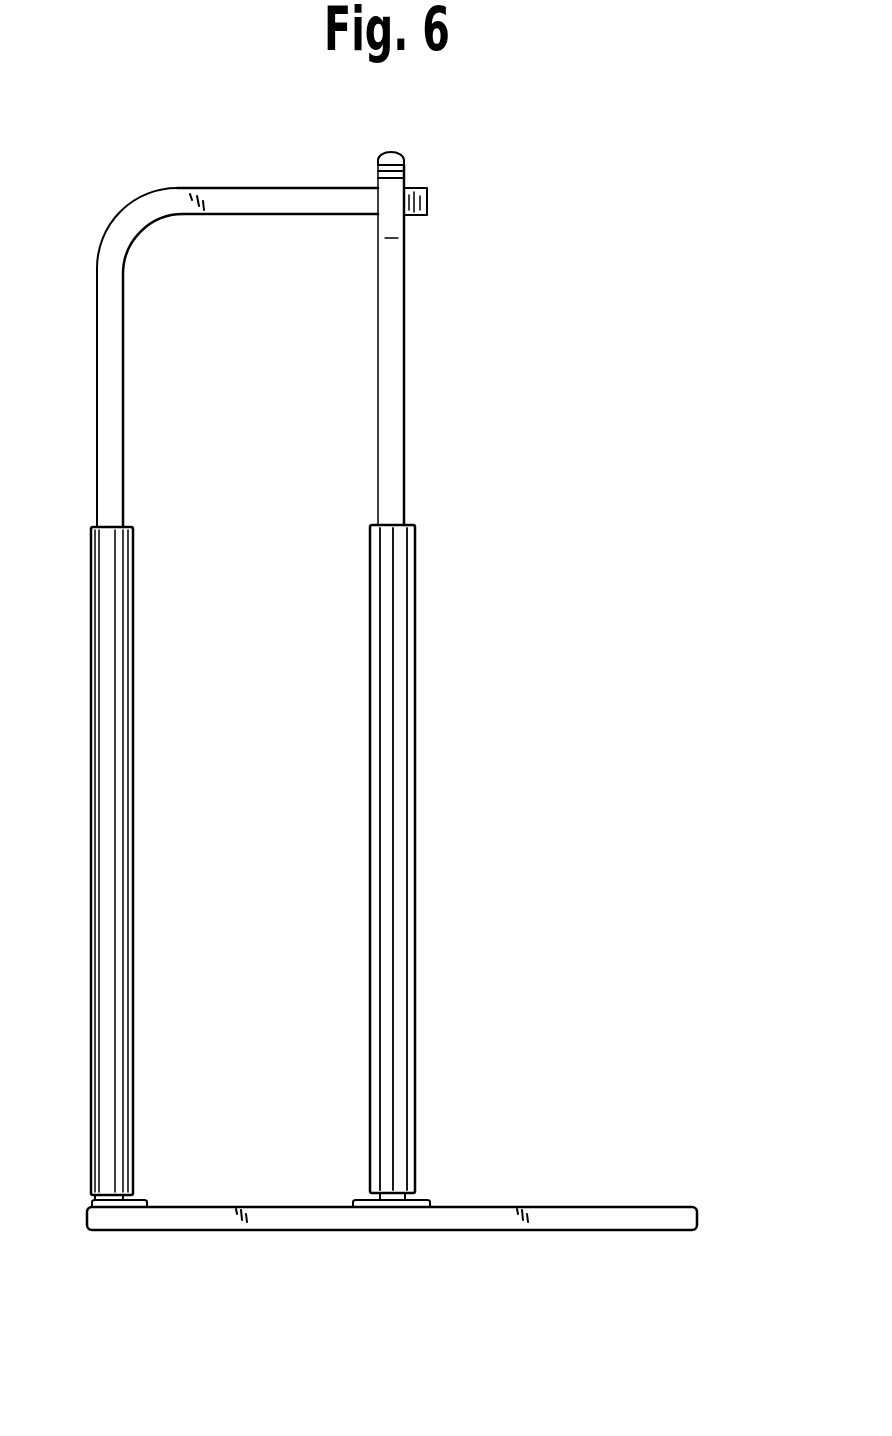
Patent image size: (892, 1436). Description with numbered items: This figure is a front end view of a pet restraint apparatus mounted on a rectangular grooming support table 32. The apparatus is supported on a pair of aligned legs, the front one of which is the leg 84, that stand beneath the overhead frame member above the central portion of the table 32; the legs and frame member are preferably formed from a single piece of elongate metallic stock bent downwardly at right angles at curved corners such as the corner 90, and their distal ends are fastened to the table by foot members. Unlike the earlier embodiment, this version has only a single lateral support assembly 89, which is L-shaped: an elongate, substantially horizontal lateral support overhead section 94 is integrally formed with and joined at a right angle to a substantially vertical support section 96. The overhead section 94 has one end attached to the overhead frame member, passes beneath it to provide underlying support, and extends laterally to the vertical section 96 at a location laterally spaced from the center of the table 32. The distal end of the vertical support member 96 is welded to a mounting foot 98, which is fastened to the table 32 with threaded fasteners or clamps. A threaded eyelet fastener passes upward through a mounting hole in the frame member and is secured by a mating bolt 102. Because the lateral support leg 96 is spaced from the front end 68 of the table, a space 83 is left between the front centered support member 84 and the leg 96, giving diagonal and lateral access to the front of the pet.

The grooming support table 32 is at (540, 1207).
The front end of the table 68 is at (330, 1215).
The space 83 is at (276, 497).
The leg 84 is at (406, 400).
The lateral support assembly 89 is at (140, 662).
The curved corner 90 is at (430, 1203).
The lateral support overhead section 94 is at (247, 195).
The vertical support section 96 is at (115, 392).
The mounting foot 98 is at (147, 1203).
The mating bolt 102 is at (390, 157).